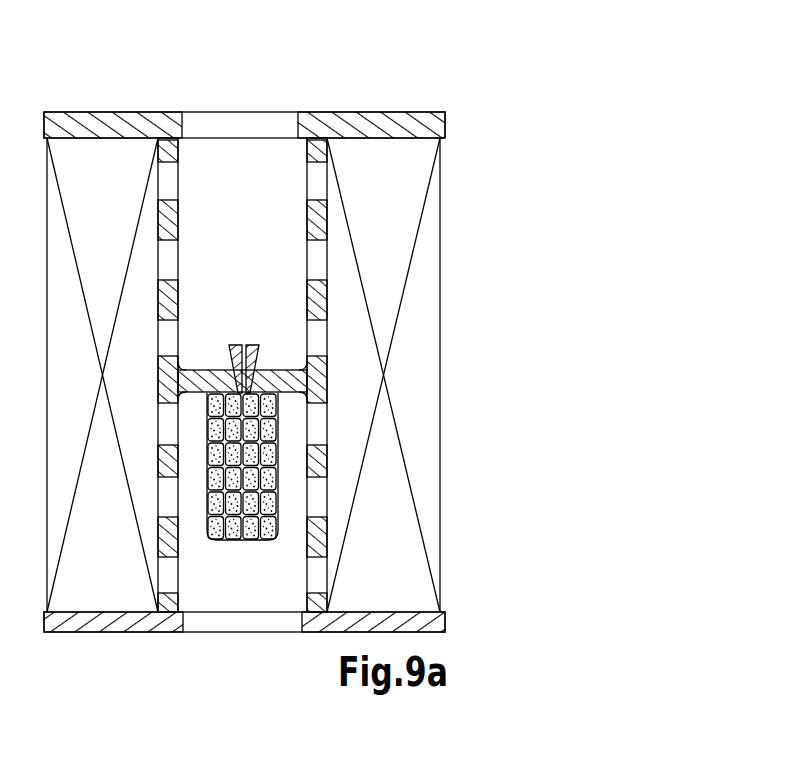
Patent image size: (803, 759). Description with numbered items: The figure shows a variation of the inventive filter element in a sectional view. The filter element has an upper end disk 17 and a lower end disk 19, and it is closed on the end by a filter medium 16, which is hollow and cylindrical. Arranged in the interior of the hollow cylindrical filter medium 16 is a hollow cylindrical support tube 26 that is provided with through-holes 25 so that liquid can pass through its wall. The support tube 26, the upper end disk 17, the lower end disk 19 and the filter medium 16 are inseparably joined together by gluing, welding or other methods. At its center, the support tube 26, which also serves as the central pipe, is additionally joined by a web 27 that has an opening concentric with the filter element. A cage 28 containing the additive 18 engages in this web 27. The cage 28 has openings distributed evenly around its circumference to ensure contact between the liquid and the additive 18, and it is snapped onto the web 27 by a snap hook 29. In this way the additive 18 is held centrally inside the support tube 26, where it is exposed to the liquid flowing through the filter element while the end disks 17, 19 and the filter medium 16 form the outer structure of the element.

The filter medium 16 is at (401, 333).
The upper end disk 17 is at (431, 112).
The additive 18 is at (268, 534).
The lower end disk 19 is at (78, 626).
The through-holes 25 is at (313, 181).
The support tube 26 is at (310, 219).
The web 27 is at (281, 370).
The cage 28 is at (217, 541).
The snap hook 29 is at (228, 357).